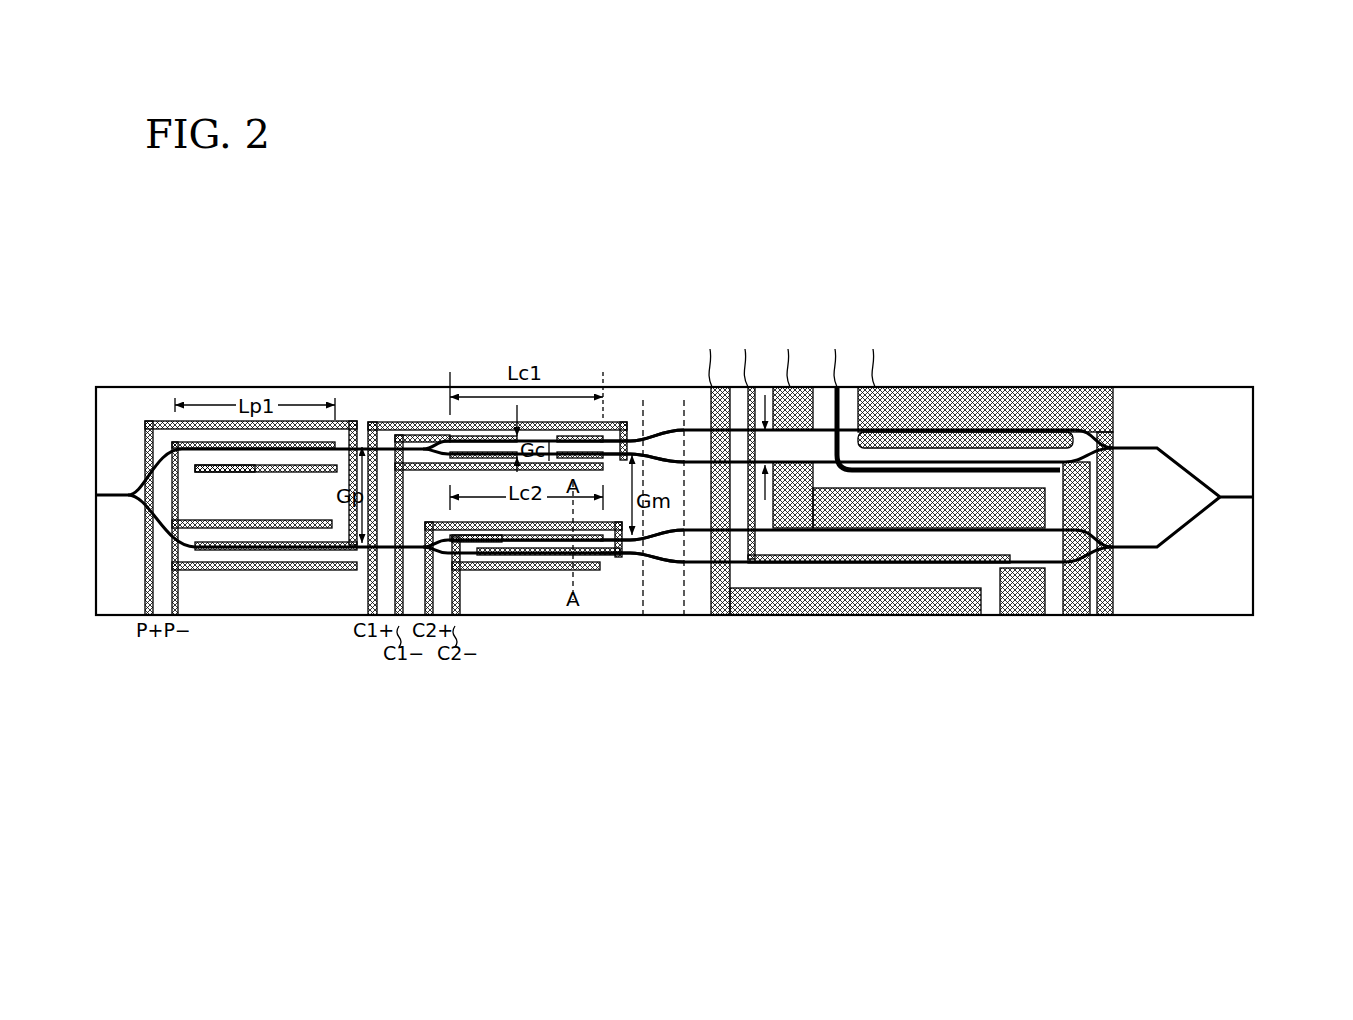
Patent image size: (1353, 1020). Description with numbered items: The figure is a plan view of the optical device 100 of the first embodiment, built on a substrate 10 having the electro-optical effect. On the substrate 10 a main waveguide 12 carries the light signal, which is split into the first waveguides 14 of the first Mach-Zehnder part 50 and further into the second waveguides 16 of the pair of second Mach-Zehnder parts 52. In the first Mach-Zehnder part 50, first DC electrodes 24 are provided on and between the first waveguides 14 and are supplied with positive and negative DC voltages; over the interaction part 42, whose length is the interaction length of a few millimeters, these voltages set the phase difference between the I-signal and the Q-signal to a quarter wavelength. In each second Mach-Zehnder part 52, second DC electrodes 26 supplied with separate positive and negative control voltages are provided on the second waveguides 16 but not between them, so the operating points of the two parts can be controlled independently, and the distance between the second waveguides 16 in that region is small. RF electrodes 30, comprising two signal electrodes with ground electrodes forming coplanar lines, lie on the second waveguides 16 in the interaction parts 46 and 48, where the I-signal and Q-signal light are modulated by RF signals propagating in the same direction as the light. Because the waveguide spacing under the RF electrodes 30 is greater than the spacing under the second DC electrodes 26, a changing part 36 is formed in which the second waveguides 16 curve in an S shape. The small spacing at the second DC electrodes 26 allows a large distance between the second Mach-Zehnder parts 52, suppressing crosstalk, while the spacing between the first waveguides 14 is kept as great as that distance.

The substrate 10 is at (1253, 568).
The main waveguide 12 is at (113, 491).
The first waveguides 14 is at (349, 421).
The second waveguides 16 is at (618, 430).
The first DC electrodes 24 is at (300, 472).
The second DC electrodes 26 is at (480, 453).
The RF electrodes 30 is at (893, 318).
The changing part 36 is at (687, 403).
The interaction part 42 is at (245, 474).
The interaction part 46 is at (990, 488).
The interaction part 48 is at (800, 586).
The first Mach-Zehnder part 50 is at (409, 715).
The second Mach-Zehnder parts 52 is at (1125, 715).
The optical device 100 is at (1060, 310).